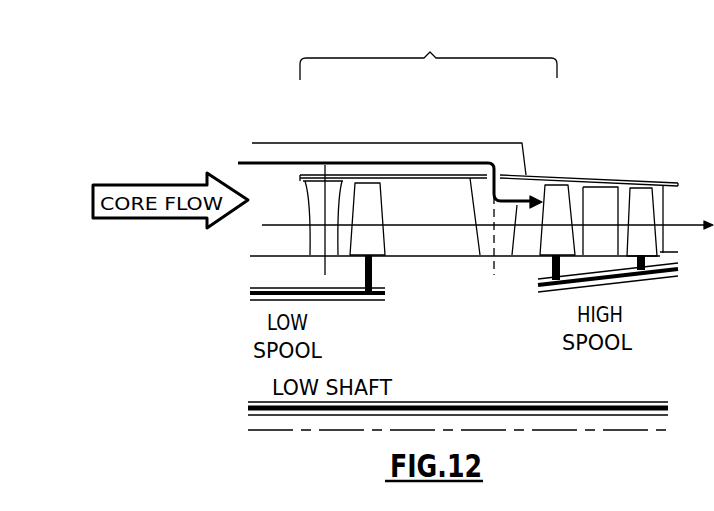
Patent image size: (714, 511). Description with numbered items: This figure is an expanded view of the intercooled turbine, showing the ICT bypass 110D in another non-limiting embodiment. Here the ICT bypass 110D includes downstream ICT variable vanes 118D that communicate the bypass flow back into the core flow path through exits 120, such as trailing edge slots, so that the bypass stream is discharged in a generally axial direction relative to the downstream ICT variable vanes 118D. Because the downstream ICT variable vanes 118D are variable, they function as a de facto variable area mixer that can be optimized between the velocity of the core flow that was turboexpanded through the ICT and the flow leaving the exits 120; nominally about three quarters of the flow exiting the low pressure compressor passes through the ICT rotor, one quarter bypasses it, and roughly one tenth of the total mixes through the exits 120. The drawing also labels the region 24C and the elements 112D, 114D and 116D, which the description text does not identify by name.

The high pressure turbine section 24C is at (428, 52).
The ICT bypass 110D is at (574, 98).
The outer case 112D is at (452, 150).
The vane 114D is at (322, 186).
The rotor blade 116D is at (368, 193).
The downstream ICT variable vanes 118D is at (487, 254).
The exits 120 is at (519, 193).